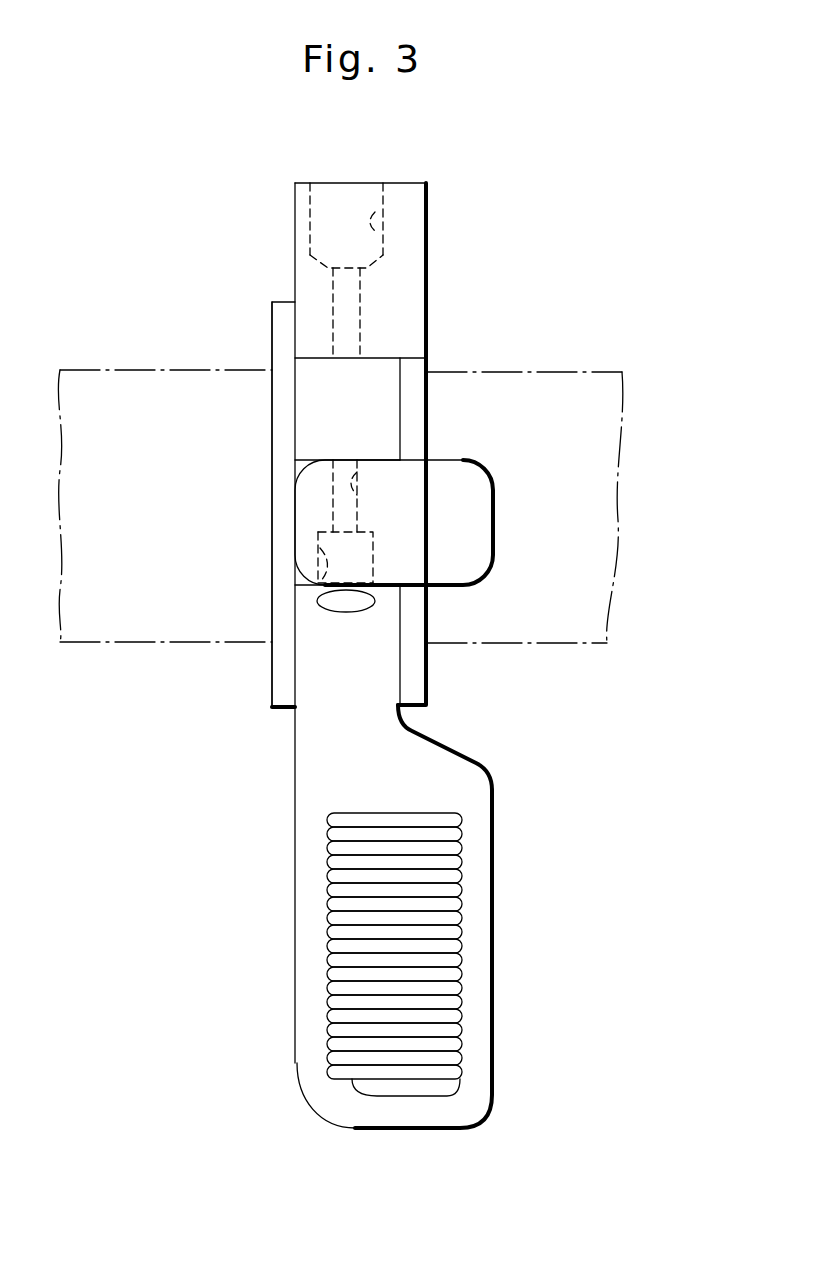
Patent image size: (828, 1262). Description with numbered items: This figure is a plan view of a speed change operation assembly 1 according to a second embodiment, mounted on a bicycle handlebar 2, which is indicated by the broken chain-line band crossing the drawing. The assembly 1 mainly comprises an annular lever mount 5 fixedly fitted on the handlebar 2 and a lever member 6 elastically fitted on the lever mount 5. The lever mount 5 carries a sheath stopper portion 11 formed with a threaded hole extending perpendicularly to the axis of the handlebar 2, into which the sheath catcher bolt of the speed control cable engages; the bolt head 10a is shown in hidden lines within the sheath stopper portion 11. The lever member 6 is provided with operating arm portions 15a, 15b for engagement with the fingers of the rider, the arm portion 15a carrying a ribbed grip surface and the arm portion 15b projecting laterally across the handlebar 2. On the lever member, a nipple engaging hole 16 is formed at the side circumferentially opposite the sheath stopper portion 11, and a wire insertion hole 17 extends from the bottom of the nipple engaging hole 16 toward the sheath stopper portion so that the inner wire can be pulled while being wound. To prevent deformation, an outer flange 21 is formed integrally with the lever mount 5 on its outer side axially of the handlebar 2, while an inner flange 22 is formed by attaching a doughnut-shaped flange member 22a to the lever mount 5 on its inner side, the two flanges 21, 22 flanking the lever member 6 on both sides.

The speed change operation assembly 1 is at (248, 952).
The handlebar 2 is at (594, 647).
The lever mount 5 is at (428, 258).
The lever member 6 is at (493, 892).
The bolt head 10a is at (382, 231).
The sheath stopper portion 11 is at (428, 304).
The operating arm portion 15a is at (494, 1008).
The operating arm portion 15b is at (493, 566).
The nipple engaging hole 16 is at (322, 588).
The wire insertion hole 17 is at (355, 496).
The outer flange 21 is at (428, 680).
The inner flange 22 is at (272, 581).
The flange member 22a is at (182, 527).